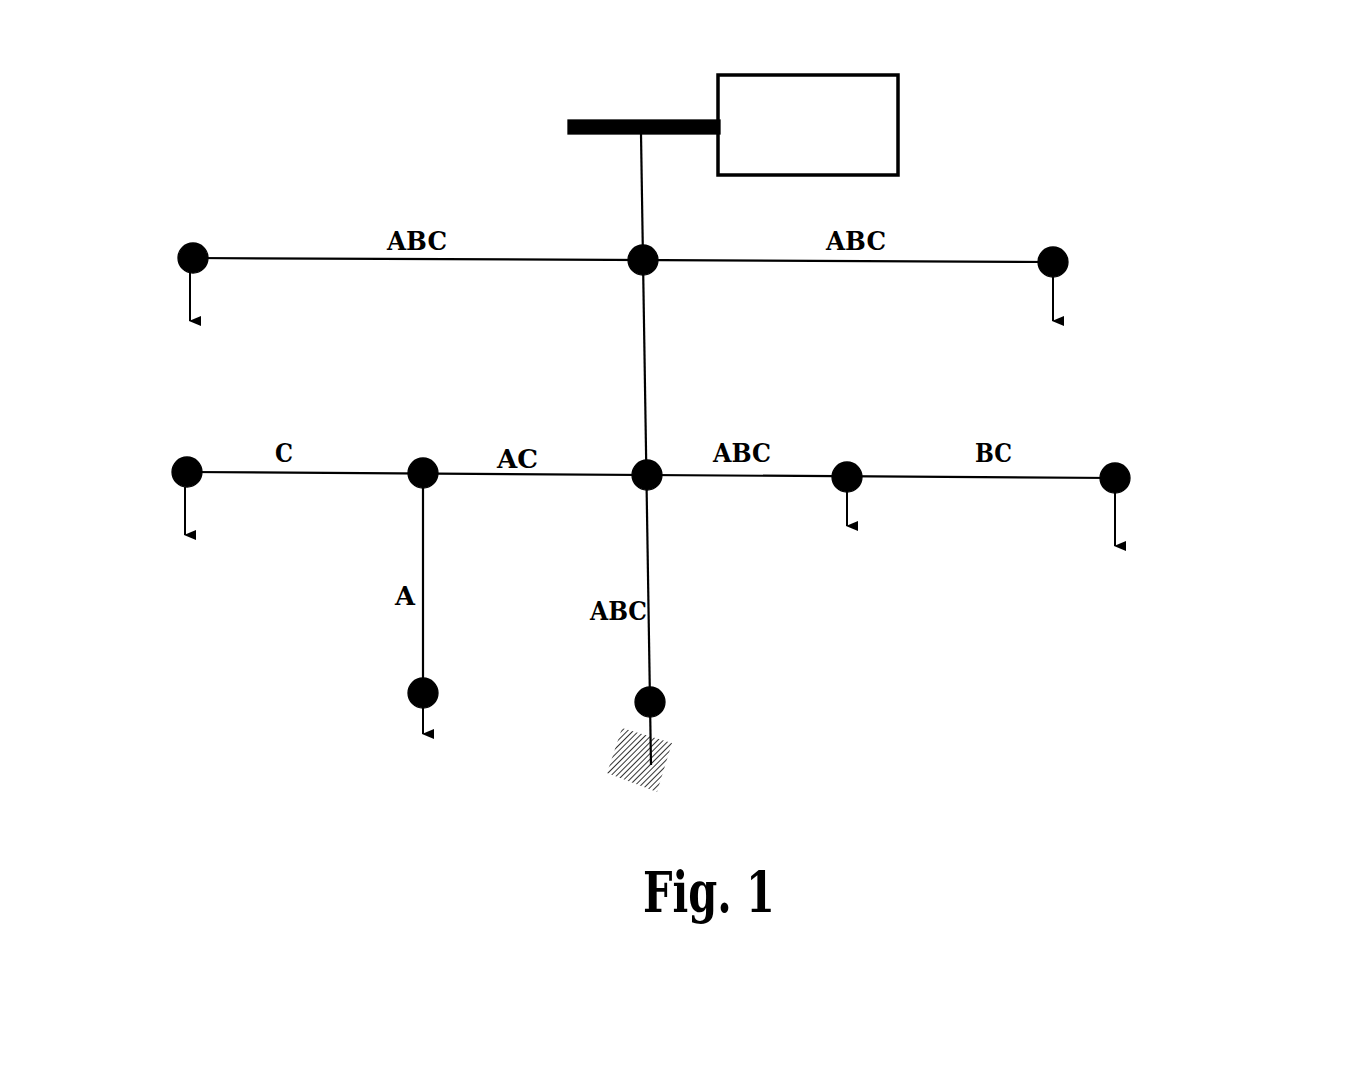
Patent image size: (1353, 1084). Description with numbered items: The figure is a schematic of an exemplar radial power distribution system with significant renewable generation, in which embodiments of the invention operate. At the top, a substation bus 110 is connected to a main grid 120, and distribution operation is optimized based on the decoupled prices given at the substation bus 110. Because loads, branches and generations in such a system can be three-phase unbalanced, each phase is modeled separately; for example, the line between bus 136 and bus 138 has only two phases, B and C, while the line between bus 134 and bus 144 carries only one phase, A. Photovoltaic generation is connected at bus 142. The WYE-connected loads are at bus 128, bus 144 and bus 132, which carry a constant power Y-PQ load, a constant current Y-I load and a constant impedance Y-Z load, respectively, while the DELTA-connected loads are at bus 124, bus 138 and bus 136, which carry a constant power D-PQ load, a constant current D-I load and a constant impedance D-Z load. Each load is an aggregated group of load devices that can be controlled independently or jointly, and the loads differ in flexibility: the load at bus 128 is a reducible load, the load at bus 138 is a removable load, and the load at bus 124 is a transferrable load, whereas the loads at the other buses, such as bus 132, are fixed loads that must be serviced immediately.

The substation bus 110 is at (570, 137).
The main grid 120 is at (885, 175).
The bus 124 is at (180, 262).
The bus 128 is at (1040, 275).
The bus 132 is at (182, 490).
The bus 134 is at (410, 490).
The bus 136 is at (835, 483).
The bus 138 is at (1113, 465).
The bus 142 is at (660, 710).
The bus 144 is at (408, 695).